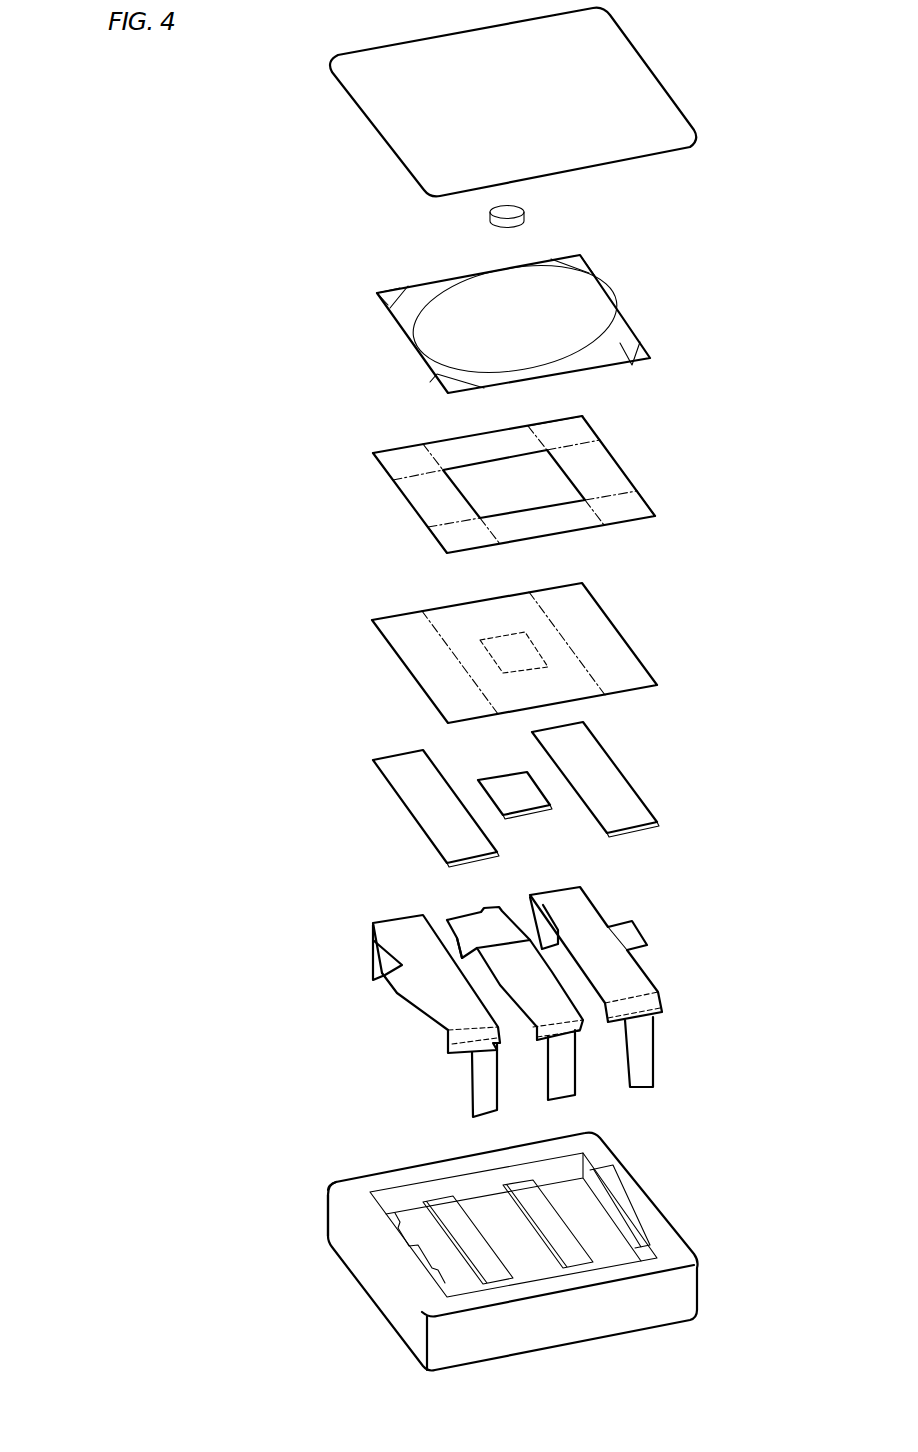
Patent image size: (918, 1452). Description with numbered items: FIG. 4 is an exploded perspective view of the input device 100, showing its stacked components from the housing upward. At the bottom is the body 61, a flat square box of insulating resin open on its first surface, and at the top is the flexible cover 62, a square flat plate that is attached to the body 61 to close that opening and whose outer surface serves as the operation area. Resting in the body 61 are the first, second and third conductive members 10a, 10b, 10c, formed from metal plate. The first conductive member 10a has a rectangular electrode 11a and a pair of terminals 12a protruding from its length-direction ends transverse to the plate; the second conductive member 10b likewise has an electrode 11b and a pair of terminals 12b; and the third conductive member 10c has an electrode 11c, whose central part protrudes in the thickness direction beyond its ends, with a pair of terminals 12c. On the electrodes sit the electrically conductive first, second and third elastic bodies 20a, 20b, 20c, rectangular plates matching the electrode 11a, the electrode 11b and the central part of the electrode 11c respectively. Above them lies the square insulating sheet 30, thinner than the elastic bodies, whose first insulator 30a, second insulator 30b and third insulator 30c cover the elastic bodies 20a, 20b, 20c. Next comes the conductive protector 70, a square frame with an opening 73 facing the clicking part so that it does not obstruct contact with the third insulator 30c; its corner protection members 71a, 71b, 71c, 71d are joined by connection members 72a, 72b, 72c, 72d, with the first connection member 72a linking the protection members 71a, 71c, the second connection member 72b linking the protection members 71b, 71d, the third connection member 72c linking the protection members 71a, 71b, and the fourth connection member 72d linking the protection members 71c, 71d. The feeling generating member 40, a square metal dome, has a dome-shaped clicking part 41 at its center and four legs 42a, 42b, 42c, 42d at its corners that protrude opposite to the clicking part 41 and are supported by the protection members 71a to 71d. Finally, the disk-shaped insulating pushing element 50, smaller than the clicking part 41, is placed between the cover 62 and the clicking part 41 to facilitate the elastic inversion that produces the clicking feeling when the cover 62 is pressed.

The input device 100 is at (204, 91).
The cover 62 is at (636, 83).
The pushing element 50 is at (526, 214).
The feeling generating member 40 is at (507, 328).
The clicking part 41 is at (594, 317).
The first leg 42a is at (440, 385).
The second leg 42b is at (648, 362).
The third leg 42c is at (386, 297).
The fourth leg 42d is at (585, 260).
The protector 70 is at (517, 482).
The first protection member 71a is at (446, 536).
The second protection member 71b is at (630, 502).
The third protection member 71c is at (398, 467).
The fourth protection member 71d is at (586, 420).
The first connection member 72a is at (425, 510).
The second connection member 72b is at (600, 462).
The third connection member 72c is at (566, 522).
The fourth connection member 72d is at (497, 437).
The opening 73 is at (506, 499).
The insulating sheet 30 is at (503, 644).
The first insulator 30a is at (432, 686).
The second insulator 30b is at (606, 637).
The third insulator 30c is at (503, 650).
The first elastic body 20a is at (408, 790).
The second elastic body 20b is at (600, 768).
The third elastic body 20c is at (503, 783).
The first conductive member 10a is at (407, 999).
The second conductive member 10b is at (632, 967).
The third conductive member 10c is at (517, 991).
The electrode 11a is at (390, 930).
The electrode 11b is at (608, 950).
The electrode 11c is at (512, 948).
The terminals 12a is at (385, 957).
The terminals 12b is at (548, 935).
The terminals 12c is at (455, 940).
The body 61 is at (665, 1232).